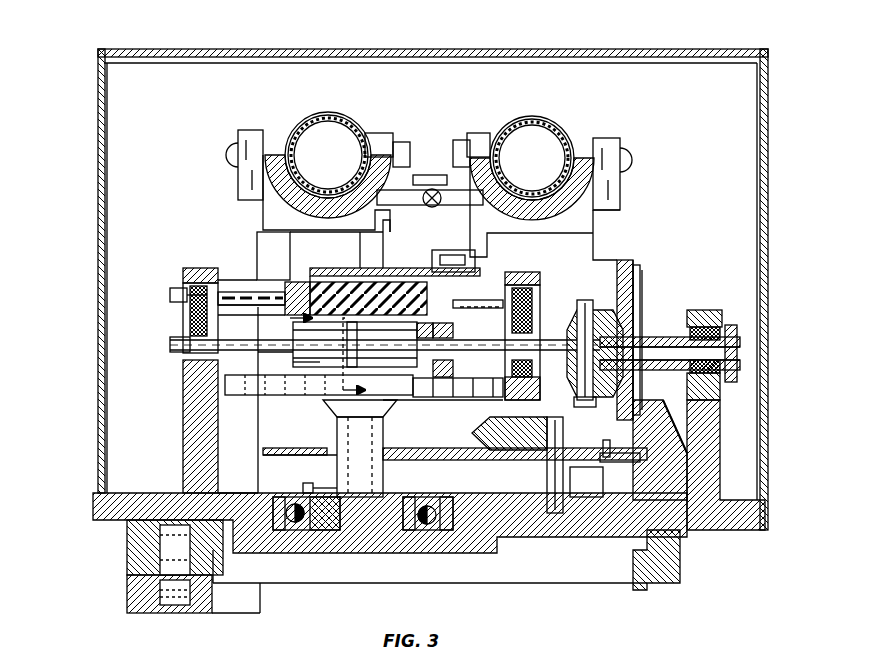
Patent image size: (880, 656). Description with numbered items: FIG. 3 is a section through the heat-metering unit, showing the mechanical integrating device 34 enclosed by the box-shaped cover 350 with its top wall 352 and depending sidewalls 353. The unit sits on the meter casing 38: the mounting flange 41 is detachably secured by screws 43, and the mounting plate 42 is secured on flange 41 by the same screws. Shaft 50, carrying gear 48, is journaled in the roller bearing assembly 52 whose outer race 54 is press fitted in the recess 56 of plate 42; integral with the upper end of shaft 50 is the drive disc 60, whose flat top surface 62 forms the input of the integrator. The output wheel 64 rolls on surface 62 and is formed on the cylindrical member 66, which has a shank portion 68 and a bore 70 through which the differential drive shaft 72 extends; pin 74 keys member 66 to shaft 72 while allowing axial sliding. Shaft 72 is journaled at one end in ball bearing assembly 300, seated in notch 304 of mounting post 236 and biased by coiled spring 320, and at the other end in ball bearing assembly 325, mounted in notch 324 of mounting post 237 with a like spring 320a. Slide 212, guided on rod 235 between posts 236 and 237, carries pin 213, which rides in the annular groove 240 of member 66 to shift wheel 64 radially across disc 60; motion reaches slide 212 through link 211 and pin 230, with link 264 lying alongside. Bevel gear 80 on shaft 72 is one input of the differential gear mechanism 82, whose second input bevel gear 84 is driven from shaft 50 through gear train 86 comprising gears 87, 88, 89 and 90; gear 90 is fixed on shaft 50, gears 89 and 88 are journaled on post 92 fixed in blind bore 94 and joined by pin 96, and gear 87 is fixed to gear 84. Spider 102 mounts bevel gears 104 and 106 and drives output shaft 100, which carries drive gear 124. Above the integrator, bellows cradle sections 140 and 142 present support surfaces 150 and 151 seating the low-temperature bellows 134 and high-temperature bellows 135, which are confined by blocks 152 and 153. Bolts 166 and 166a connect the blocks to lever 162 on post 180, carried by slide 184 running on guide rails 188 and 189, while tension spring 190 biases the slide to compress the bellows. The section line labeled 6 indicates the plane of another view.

The cover 350 is at (300, 44).
The top wall 352 is at (436, 50).
The sidewalls 353 is at (97, 150).
The mounting plate 42 is at (742, 532).
The mounting flange 41 is at (680, 572).
The screws 43 is at (127, 563).
The casing 38 is at (127, 598).
The outer race 54 is at (262, 595).
The coiled spring 320 is at (183, 290).
The ball bearing assembly 300 is at (183, 325).
The notch 304 is at (183, 358).
The mounting post 236 is at (183, 390).
The drive disc 60 is at (258, 418).
The slide 212 is at (265, 280).
The rod 235 is at (245, 293).
The shank portion 68 is at (296, 300).
The pin 230 is at (368, 298).
The cylindrical member 66 is at (353, 270).
The motion-transmitting link 264 is at (460, 276).
The link 211 is at (350, 249).
The guide rail 188 is at (378, 200).
The bore 70 is at (280, 345).
The section line 6 is at (346, 354).
The differential drive shaft 72 is at (258, 352).
The pin 74 is at (300, 362).
The wheel 64 is at (453, 370).
The pin 213 is at (452, 331).
The ball bearing assembly 325 is at (503, 320).
The top surface 62 is at (252, 396).
The annular groove 240 is at (450, 422).
The shaft 50 is at (332, 420).
The gear 90 is at (298, 448).
The gear 48 is at (308, 484).
The roller bearing assembly 52 is at (308, 530).
The recess 56 is at (440, 532).
The gear 88 is at (480, 450).
The mechanical integrating device 34 is at (450, 418).
The mounting post 237 is at (509, 433).
The blind bore 94 is at (556, 518).
The post 92 is at (603, 480).
The pin 96 is at (612, 448).
The gear 89 is at (627, 463).
The bevel gear 106 is at (658, 449).
The coiled spring 320a is at (520, 290).
The notch 324 is at (519, 388).
The bevel gear 80 is at (575, 320).
The bevel gear 104 is at (585, 300).
The spider 102 is at (574, 400).
The differential gear mechanism 82 is at (612, 290).
The gear train 86 is at (656, 260).
The gear 87 is at (640, 272).
The bevel gear 84 is at (645, 290).
The output shaft 100 is at (645, 335).
The drive gear 124 is at (740, 340).
The block 152 is at (238, 182).
The bolt 166 is at (232, 152).
The bellows cradle section 140 is at (272, 150).
The low-temperature bellows 134 is at (328, 112).
The support surface 150 is at (350, 178).
The tension spring 190 is at (432, 188).
The post 180 is at (428, 175).
The slide 184 is at (450, 230).
The lever 162 is at (462, 143).
The guide rail 189 is at (470, 240).
The high-temperature bellows 135 is at (556, 120).
The support surface 151 is at (555, 182).
The bellows cradle section 142 is at (598, 148).
The bolt 166a is at (632, 155).
The block 153 is at (620, 192).